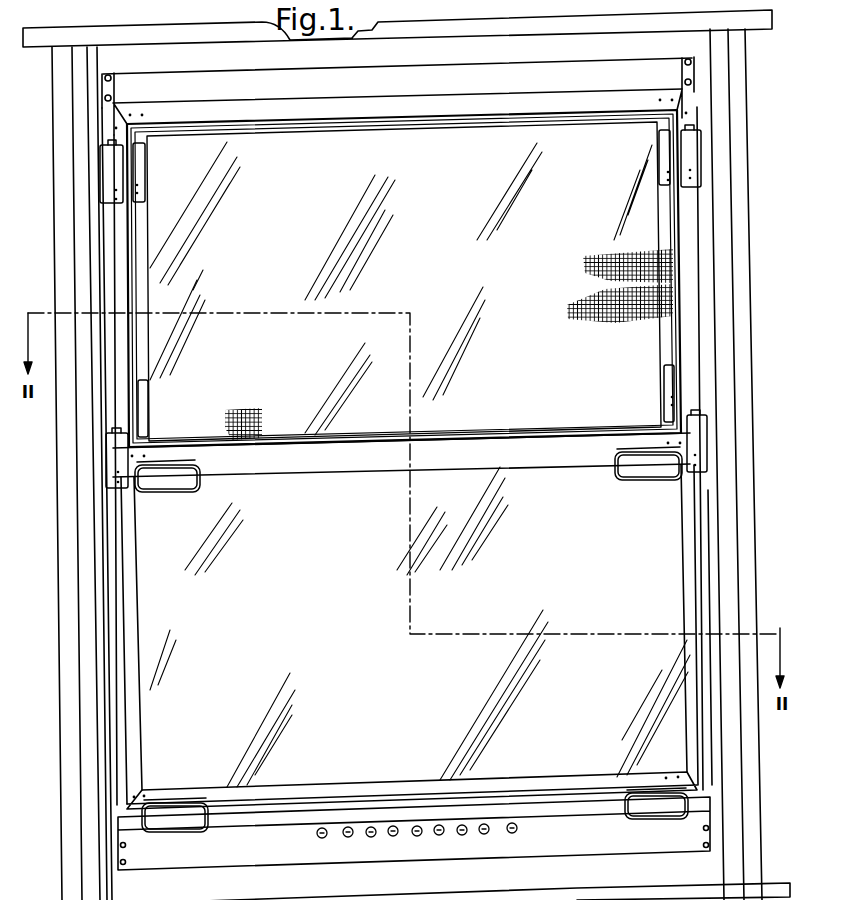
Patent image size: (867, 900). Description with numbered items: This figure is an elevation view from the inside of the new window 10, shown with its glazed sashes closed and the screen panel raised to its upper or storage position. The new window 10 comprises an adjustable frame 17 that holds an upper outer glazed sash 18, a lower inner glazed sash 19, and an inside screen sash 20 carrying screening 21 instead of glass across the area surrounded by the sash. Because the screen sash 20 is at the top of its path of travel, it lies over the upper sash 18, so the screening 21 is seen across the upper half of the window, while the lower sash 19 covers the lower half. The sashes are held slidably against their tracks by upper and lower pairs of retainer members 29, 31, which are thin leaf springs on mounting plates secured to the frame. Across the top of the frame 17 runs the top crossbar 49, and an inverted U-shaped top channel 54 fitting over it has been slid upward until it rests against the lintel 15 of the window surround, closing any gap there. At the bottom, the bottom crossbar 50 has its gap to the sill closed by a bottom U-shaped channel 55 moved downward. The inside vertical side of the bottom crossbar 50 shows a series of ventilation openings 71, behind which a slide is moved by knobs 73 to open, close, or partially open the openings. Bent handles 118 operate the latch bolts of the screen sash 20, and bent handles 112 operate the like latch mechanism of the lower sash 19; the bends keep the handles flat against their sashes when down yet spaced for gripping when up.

The new window 10 is at (410, 222).
The lintel 15 is at (488, 28).
The adjustable frame 17 is at (100, 605).
The upper outer glazed sash 18 is at (150, 272).
The lower sash 19 is at (140, 700).
The inside screen sash 20 is at (466, 433).
The screening 21 is at (598, 316).
The retainer members 29 is at (144, 167).
The retainer members 31 is at (108, 165).
The top crossbar 49 is at (375, 91).
The bottom crossbar 50 is at (224, 865).
The top channel 54 is at (233, 65).
The bottom channel 55 is at (294, 890).
The ventilation openings 71 is at (350, 837).
The knobs 73 is at (319, 838).
The handles 112 is at (183, 833).
The handles 118 is at (150, 492).